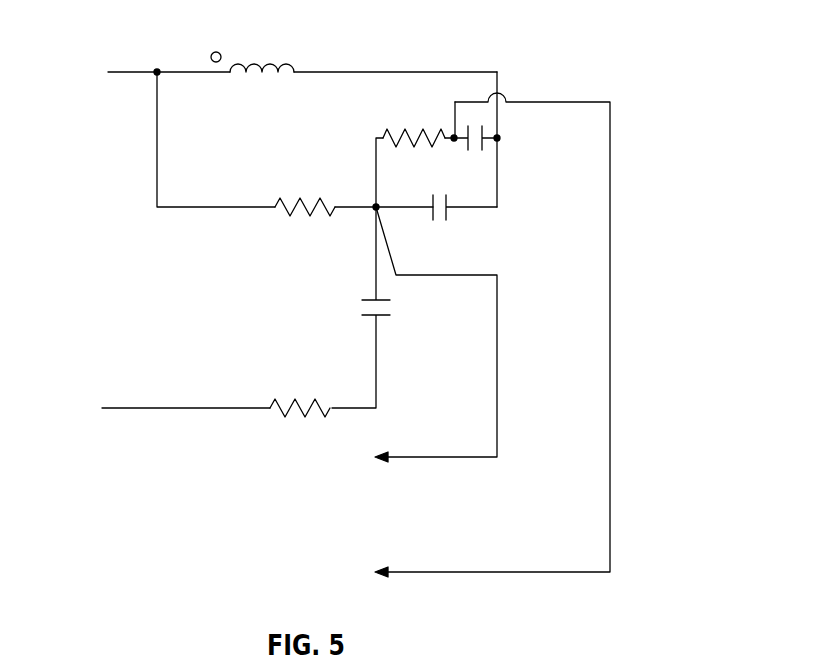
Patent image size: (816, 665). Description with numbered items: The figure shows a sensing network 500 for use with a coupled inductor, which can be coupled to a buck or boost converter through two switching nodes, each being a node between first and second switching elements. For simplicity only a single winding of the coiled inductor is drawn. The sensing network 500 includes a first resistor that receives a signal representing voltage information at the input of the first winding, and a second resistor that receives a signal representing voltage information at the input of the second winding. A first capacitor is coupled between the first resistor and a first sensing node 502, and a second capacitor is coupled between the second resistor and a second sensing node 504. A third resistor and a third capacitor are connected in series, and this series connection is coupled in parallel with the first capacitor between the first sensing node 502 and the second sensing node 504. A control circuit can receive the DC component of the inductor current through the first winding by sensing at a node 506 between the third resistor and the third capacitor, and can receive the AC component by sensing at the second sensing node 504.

The sensing network 500 is at (364, 297).
The first sensing node 502 is at (498, 209).
The second sensing node 504 is at (376, 207).
The node 506 is at (454, 138).